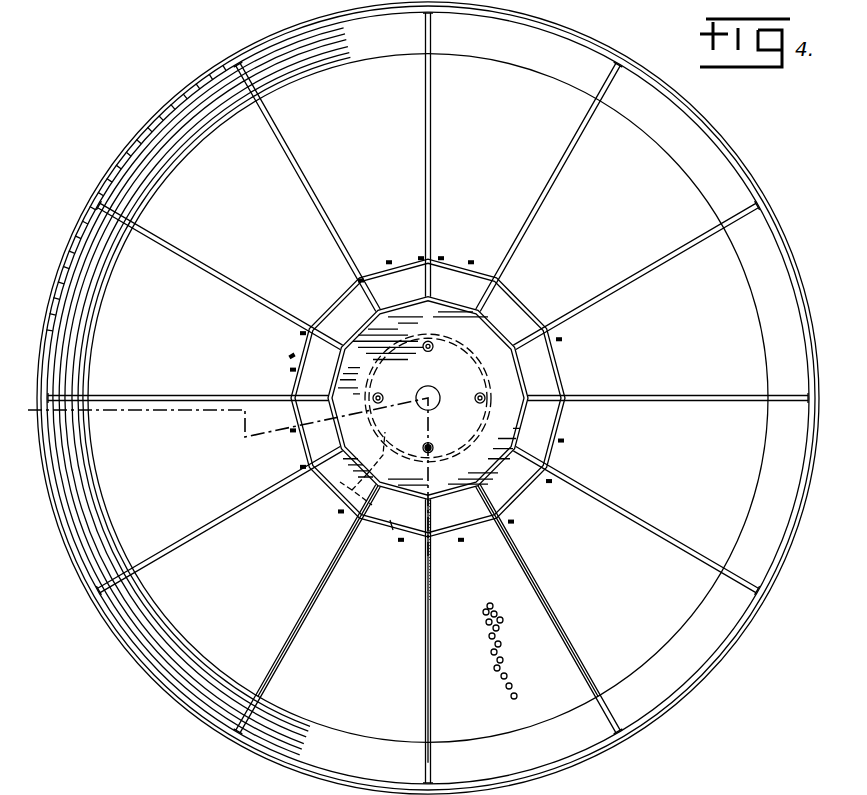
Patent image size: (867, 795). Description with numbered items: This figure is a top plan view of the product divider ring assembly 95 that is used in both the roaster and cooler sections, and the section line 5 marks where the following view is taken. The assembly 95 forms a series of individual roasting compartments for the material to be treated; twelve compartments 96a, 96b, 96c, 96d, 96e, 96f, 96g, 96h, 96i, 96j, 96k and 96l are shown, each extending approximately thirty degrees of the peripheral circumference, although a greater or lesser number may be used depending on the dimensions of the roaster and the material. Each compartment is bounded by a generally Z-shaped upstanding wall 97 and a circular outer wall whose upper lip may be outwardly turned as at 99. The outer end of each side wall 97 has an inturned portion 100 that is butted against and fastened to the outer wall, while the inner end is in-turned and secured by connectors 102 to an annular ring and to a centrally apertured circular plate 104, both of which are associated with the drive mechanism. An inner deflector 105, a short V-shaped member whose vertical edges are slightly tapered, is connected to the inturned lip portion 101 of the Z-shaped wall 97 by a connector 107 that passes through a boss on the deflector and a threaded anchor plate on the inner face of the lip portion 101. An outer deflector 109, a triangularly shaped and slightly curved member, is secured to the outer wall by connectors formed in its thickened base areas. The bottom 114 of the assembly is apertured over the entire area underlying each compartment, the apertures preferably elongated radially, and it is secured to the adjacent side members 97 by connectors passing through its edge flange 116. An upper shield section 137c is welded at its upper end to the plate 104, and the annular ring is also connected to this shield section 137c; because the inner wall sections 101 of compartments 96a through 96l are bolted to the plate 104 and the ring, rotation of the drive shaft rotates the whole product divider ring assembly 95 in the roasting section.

The section line 5— 5 is at (22, 374).
The product divider ring assembly 95 is at (128, 653).
The compartment 96a is at (668, 430).
The compartment 96b is at (635, 276).
The compartment 96c is at (548, 187).
The compartment 96d is at (466, 155).
The compartment 96e is at (309, 187).
The compartment 96f is at (219, 276).
The compartment 96g is at (188, 358).
The compartment 96h is at (219, 519).
The compartment 96i is at (297, 608).
The compartment 96j is at (376, 641).
The compartment 96k is at (534, 608).
The compartment 96l is at (635, 519).
The Z-shaped upstanding wall 97 is at (640, 522).
The outwardly turned upper lip 99 is at (78, 560).
The inturned portion 100 is at (113, 601).
The inturned lip portion 101 is at (325, 404).
The connectors 102 is at (336, 375).
The centrally apertured circular plate 104 is at (488, 345).
The inner deflector 105 is at (312, 446).
The connector 107 is at (392, 525).
The outer deflector 109 is at (692, 164).
The bottom 114 is at (527, 687).
The edge flange 116 is at (432, 606).
The upper shield section 137c is at (368, 473).